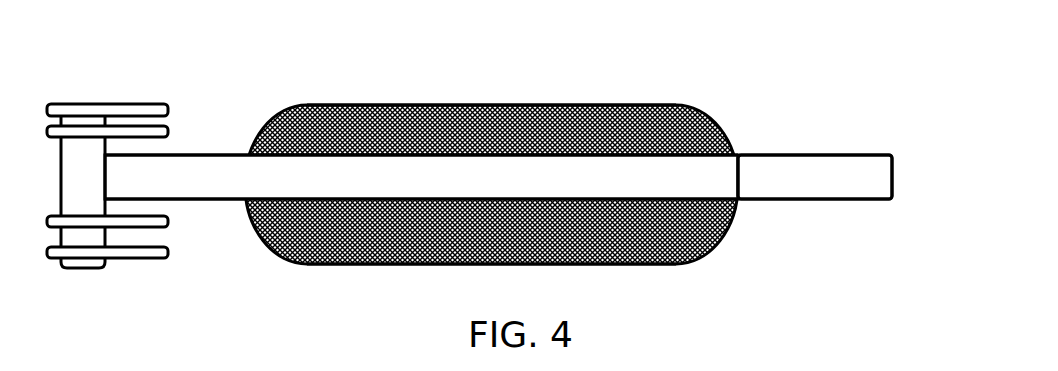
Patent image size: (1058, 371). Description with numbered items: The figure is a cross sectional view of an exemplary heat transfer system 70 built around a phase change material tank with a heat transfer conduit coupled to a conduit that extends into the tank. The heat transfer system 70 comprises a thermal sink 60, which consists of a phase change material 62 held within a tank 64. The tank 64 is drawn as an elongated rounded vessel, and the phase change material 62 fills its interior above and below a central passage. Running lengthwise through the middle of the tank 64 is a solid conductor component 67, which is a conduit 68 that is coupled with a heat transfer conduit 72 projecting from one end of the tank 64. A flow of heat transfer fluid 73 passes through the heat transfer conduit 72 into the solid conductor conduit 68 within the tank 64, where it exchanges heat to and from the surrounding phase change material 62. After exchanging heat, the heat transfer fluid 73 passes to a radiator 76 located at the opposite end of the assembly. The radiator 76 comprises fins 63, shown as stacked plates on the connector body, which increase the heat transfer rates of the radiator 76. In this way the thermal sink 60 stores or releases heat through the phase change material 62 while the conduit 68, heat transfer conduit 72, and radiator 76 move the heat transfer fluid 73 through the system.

The thermal sink 60 is at (686, 106).
The phase change material 62 is at (727, 243).
The fins 63 is at (107, 258).
The tank 64 is at (310, 105).
The solid conductor component 67 is at (450, 172).
The conduit 68 is at (710, 176).
The heat transfer system 70 is at (260, 104).
The heat transfer conduit 72 is at (823, 182).
The heat transfer fluid 73 is at (863, 182).
The radiator 76 is at (80, 104).